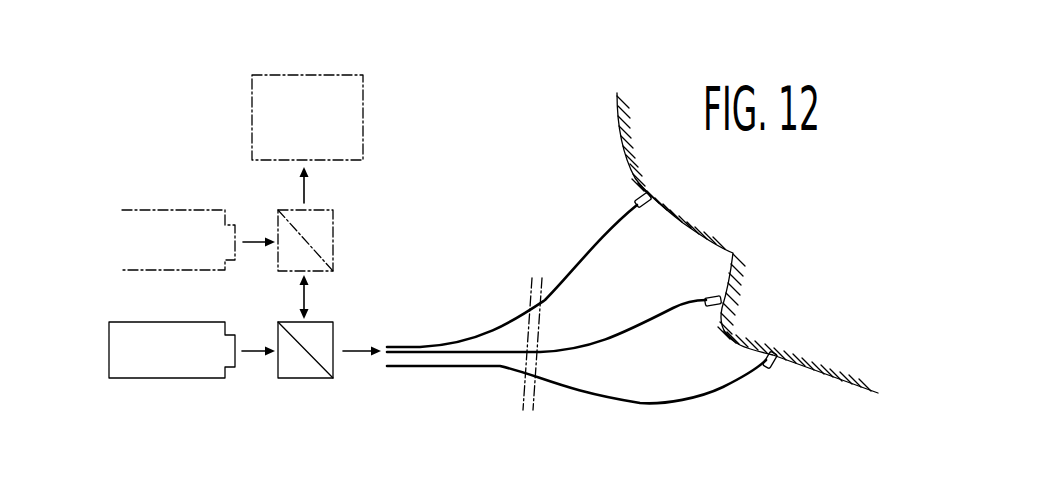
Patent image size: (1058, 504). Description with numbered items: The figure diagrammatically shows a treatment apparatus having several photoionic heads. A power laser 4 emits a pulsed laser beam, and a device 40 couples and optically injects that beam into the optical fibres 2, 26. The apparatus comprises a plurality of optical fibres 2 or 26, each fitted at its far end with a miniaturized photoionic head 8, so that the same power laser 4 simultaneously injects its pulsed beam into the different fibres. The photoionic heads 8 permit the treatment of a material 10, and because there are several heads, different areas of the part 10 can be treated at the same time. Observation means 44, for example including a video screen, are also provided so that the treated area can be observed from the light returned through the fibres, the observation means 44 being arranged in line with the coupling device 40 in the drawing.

The observation means 44 is at (252, 112).
The power laser 4 is at (180, 373).
The coupling and optical injection device 40 is at (301, 373).
The optical fibre 2 is at (576, 321).
The optical fibre 26 is at (556, 303).
The miniaturized photoionic head 8 is at (640, 196).
The material 10 is at (740, 280).